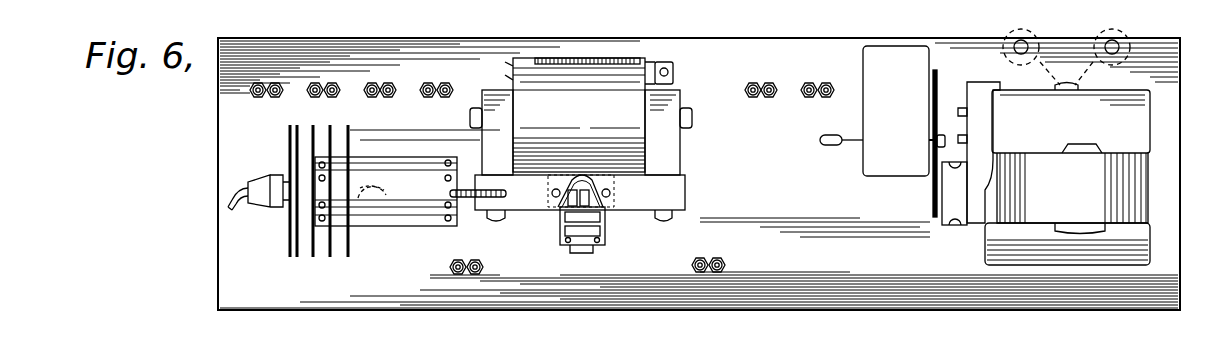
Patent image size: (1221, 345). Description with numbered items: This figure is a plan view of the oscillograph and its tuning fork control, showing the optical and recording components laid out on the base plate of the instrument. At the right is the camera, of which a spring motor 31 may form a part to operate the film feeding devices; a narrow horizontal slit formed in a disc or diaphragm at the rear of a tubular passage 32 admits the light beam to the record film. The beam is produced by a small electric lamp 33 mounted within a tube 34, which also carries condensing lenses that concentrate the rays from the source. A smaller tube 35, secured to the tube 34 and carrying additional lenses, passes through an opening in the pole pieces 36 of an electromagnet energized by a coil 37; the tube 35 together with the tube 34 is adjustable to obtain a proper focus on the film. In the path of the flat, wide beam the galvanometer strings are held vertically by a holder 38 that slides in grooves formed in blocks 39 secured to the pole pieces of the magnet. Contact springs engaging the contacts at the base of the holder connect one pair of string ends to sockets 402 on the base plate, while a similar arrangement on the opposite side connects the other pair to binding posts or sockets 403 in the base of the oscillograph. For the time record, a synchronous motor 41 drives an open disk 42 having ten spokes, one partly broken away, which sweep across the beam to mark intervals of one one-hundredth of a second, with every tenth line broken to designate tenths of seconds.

The spring motor 31 is at (1130, 120).
The tubular passage 32 is at (950, 205).
The electric lamp 33 is at (372, 200).
The tube 34 is at (422, 217).
The smaller tube 35 is at (465, 200).
The pole pieces 36 is at (672, 191).
The coil 37 is at (627, 110).
The holder 38 is at (603, 230).
The blocks 39 is at (555, 222).
The synchronous motor 41 is at (880, 110).
The open disk 42 is at (931, 193).
The sockets 402 is at (458, 275).
The sockets 403 is at (700, 273).